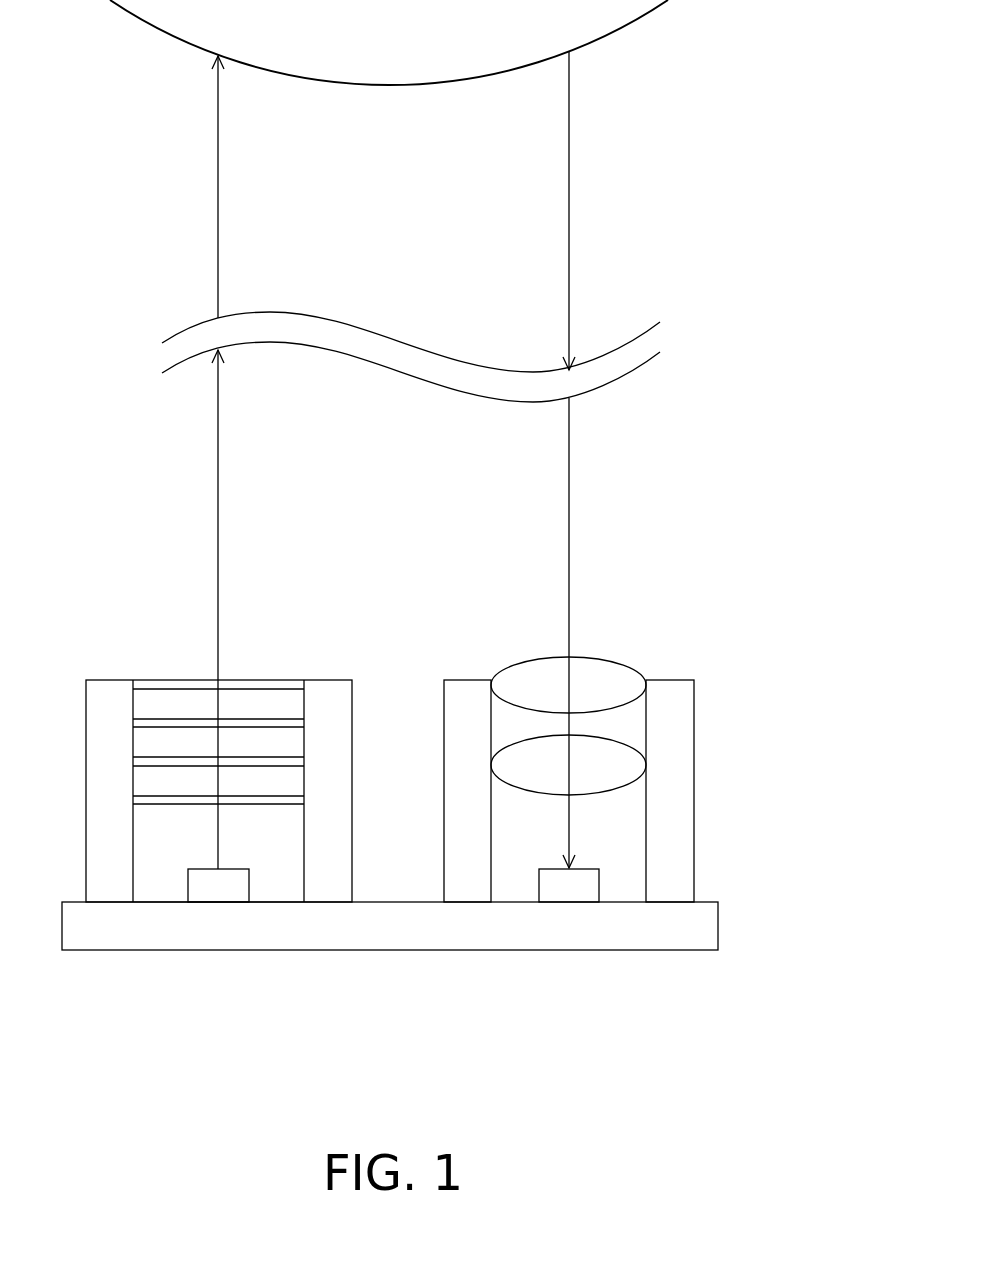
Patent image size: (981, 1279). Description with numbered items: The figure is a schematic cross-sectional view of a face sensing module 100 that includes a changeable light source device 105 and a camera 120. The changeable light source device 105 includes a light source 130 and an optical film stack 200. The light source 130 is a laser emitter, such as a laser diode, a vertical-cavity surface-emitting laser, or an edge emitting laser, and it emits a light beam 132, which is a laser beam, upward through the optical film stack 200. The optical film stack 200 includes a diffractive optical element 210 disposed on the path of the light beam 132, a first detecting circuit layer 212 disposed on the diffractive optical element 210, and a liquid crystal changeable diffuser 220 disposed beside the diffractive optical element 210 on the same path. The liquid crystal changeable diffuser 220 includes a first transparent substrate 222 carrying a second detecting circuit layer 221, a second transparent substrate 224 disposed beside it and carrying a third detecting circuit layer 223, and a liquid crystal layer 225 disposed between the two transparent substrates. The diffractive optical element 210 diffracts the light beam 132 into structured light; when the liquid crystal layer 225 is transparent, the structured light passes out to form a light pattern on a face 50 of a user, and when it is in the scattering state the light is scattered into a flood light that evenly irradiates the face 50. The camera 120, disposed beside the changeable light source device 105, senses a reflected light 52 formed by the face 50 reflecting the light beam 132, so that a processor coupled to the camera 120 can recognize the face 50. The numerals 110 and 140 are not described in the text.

The face sensing module 100 is at (837, 1049).
The face 50 is at (638, 20).
The reflected light 52 is at (569, 209).
The light beam 132 is at (218, 209).
The changeable light source device 105 is at (100, 655).
The substrate 110 is at (700, 931).
The camera 120 is at (675, 817).
The light source 130 is at (222, 886).
The housing 140 is at (100, 817).
The optical film stack 200 is at (428, 480).
The diffractive optical element 210 is at (288, 782).
The first detecting circuit layer 212 is at (294, 802).
The liquid crystal changeable diffuser 220 is at (364, 415).
The second detecting circuit layer 221 is at (270, 763).
The first transparent substrate 222 is at (264, 743).
The third detecting circuit layer 223 is at (234, 686).
The second transparent substrate 224 is at (246, 708).
The liquid crystal layer 225 is at (257, 728).